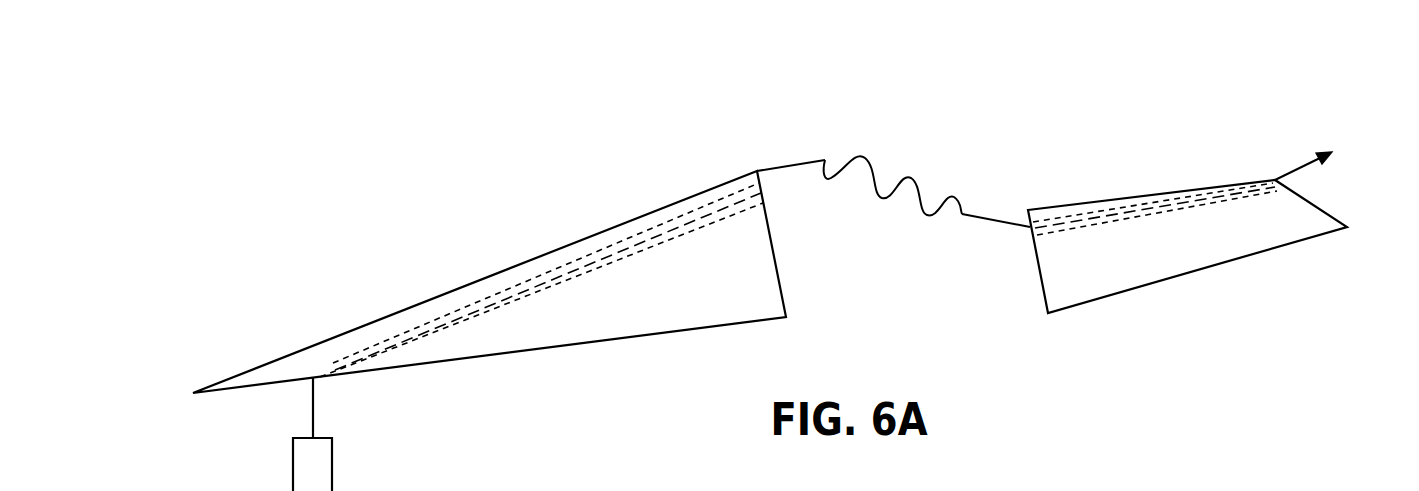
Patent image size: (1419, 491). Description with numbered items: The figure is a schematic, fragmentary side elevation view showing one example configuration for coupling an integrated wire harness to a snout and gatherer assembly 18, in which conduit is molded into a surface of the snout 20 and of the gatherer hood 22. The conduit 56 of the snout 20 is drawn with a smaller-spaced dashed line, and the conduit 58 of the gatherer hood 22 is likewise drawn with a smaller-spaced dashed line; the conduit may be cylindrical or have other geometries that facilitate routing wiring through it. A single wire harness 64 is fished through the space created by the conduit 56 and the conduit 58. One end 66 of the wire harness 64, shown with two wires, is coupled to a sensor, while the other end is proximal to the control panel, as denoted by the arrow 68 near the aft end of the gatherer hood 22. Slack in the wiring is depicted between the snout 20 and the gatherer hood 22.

The snout and gatherer assembly 18 is at (970, 106).
The snout 20 is at (700, 193).
The gatherer hood 22 is at (1292, 247).
The conduit 56 is at (673, 237).
The conduit 58 is at (1068, 231).
The wire harness 64 is at (824, 160).
The end 66 is at (313, 413).
The arrow 68 is at (1292, 172).